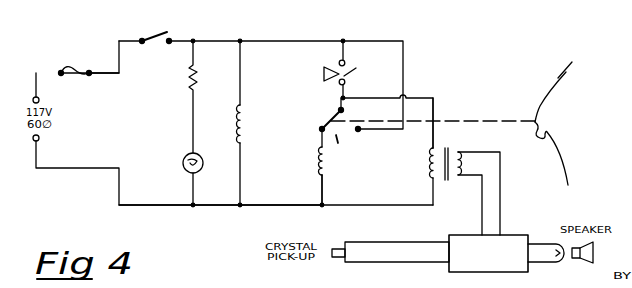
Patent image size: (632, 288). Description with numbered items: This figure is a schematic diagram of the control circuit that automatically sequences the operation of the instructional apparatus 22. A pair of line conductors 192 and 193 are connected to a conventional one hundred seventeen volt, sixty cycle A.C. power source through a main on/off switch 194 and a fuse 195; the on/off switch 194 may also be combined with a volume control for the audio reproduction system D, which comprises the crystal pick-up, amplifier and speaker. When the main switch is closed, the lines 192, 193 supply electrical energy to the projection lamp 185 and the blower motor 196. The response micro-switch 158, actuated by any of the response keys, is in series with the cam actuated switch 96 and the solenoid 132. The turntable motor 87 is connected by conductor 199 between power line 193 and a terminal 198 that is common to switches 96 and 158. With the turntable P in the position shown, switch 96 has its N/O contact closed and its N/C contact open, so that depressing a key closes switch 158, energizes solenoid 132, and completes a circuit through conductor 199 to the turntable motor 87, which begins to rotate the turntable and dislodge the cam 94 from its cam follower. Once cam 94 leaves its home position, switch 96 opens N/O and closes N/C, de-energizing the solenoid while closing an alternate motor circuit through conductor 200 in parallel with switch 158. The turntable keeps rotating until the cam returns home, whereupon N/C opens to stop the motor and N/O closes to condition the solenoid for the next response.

The record player apparatus 22 is at (84, 0).
The main on/off switch 194 is at (152, 37).
The fuse 195 is at (76, 72).
The line conductor 192 is at (299, 41).
The micro-switch 158 is at (364, 60).
The conductor 200 is at (404, 66).
The terminal 198 is at (341, 98).
The conductor 199 is at (433, 108).
The blower motor 196 is at (236, 128).
The projection lamp 185 is at (188, 150).
The cam actuated switch 96 is at (309, 168).
The solenoid 132 is at (322, 176).
The turntable motor 87 is at (433, 180).
The line conductor 193 is at (152, 207).
The cam 94 is at (540, 132).
The turntable P is at (570, 92).
The audio reproduction system D is at (516, 230).